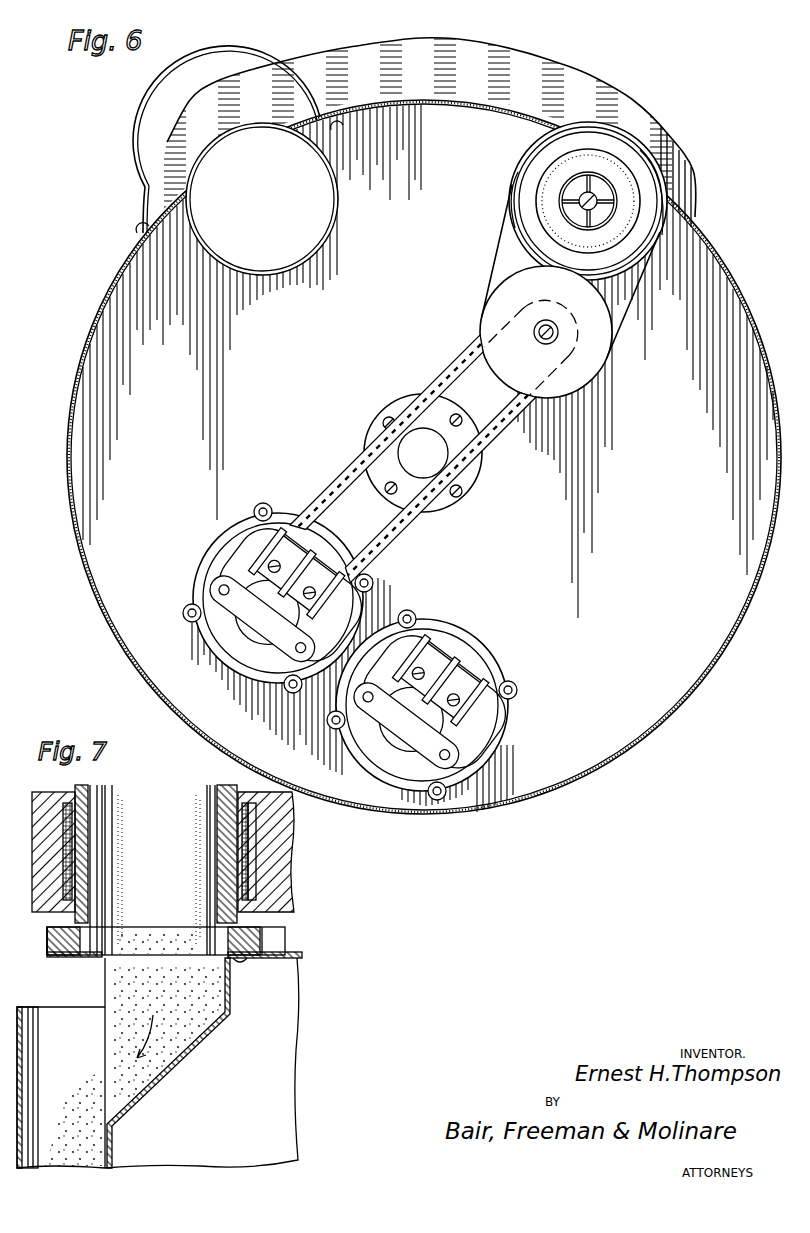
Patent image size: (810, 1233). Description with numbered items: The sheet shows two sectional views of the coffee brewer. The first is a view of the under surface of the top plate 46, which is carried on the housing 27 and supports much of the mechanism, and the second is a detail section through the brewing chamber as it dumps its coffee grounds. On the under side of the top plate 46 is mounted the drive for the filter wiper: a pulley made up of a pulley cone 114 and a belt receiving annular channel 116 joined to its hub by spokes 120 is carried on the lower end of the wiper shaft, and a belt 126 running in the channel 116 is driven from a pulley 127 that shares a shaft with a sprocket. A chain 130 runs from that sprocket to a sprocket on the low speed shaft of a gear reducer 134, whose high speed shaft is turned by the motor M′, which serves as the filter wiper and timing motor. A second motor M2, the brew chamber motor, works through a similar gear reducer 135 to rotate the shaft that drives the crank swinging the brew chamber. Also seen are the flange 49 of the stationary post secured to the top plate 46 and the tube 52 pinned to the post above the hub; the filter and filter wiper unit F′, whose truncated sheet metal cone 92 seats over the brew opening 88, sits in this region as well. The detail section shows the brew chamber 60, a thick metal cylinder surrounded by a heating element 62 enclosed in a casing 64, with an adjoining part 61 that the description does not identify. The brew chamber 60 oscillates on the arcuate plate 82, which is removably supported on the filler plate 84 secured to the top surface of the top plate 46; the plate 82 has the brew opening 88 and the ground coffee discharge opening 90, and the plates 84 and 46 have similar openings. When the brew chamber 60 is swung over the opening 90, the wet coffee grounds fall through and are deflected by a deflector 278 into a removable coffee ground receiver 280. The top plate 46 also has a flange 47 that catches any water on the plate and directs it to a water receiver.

In FIG. 6, the top plate 46 is at (642, 112).
In FIG. 7, the top plate 46 is at (302, 956).
In FIG. 6, the housing 27 is at (126, 262).
In FIG. 6, the coffee ground receiver 280 is at (147, 127).
In FIG. 7, the coffee ground receiver 280 is at (55, 1138).
In FIG. 6, the ground coffee discharge opening 90 is at (235, 272).
In FIG. 7, the ground coffee discharge opening 90 is at (148, 940).
In FIG. 6, the pulley cone 114 is at (632, 197).
In FIG. 6, the truncated cone 92 is at (656, 227).
In FIG. 6, the brew opening 88 is at (512, 182).
In FIG. 6, the belt receiving annular channel 116 is at (537, 220).
In FIG. 6, the spokes 120 is at (578, 177).
In FIG. 6, the filter and filter wiper unit F′ is at (653, 180).
In FIG. 6, the pulley 127 is at (491, 311).
In FIG. 6, the belt 126 is at (503, 253).
In FIG. 6, the flange 49 is at (466, 484).
In FIG. 6, the tube 52 is at (438, 455).
In FIG. 6, the gear reducer 134 is at (214, 577).
In FIG. 6, the motor M′ is at (245, 552).
In FIG. 6, the gear reducer 135 is at (486, 742).
In FIG. 6, the motor M2 is at (466, 672).
In FIG. 6, the chain 130 is at (461, 372).
In FIG. 7, the casing 64 is at (54, 792).
In FIG. 7, the bearing block 61 is at (270, 884).
In FIG. 7, the brew chamber 60 is at (83, 792).
In FIG. 7, the heating element 62 is at (250, 849).
In FIG. 7, the filler plate 84 is at (265, 932).
In FIG. 7, the flange 47 is at (290, 943).
In FIG. 7, the arcuate plate 82 is at (46, 929).
In FIG. 7, the deflector 278 is at (177, 1043).